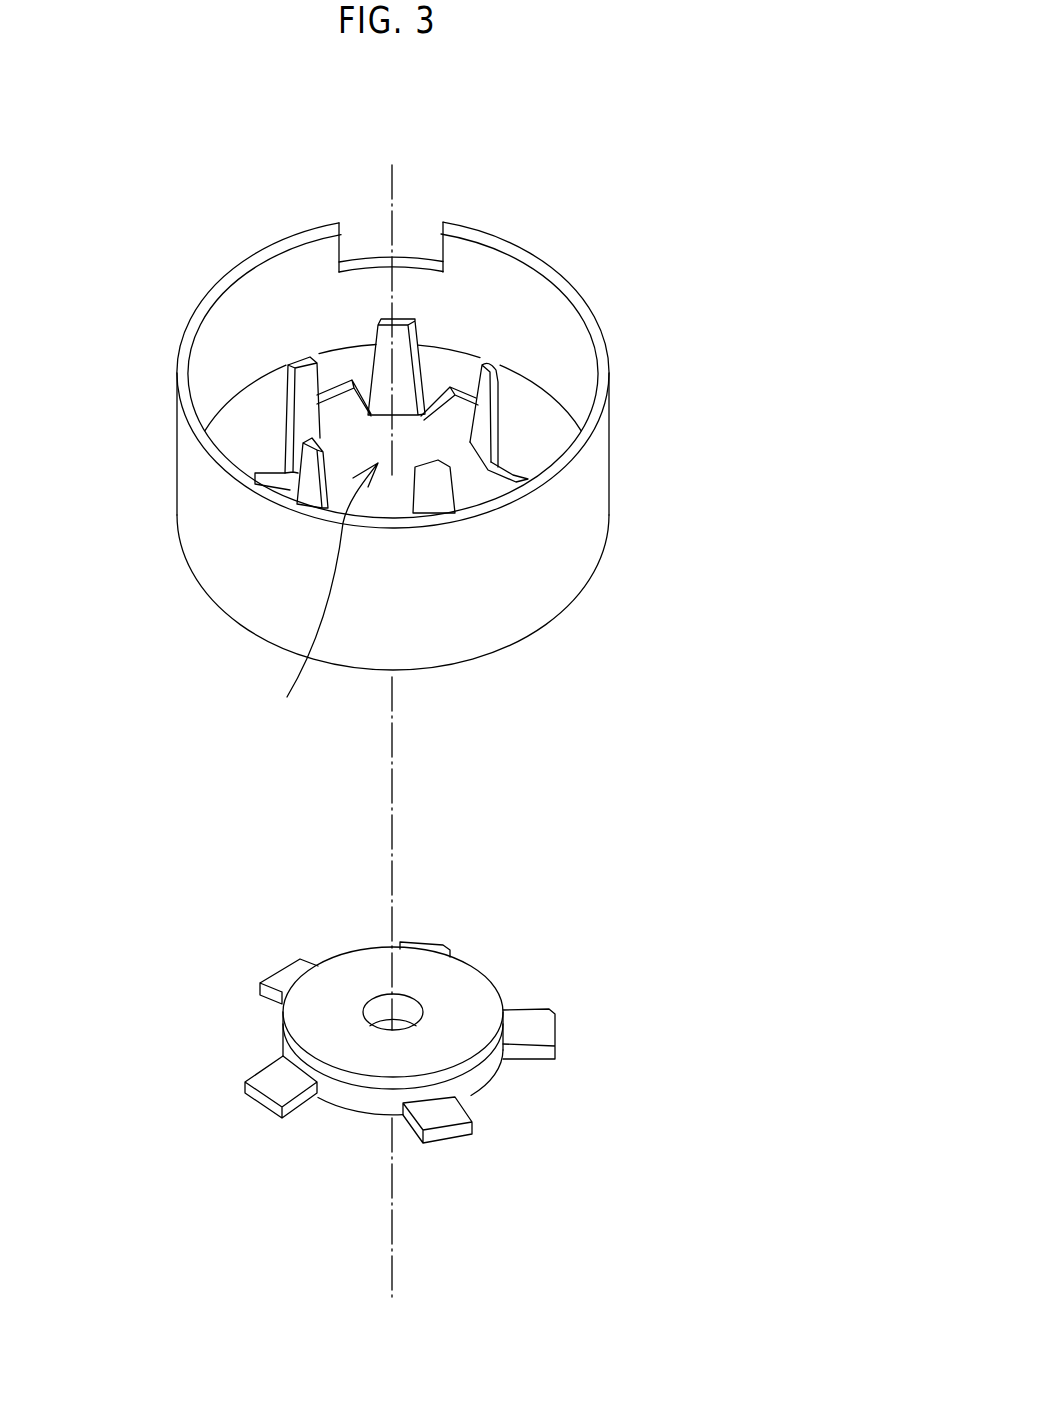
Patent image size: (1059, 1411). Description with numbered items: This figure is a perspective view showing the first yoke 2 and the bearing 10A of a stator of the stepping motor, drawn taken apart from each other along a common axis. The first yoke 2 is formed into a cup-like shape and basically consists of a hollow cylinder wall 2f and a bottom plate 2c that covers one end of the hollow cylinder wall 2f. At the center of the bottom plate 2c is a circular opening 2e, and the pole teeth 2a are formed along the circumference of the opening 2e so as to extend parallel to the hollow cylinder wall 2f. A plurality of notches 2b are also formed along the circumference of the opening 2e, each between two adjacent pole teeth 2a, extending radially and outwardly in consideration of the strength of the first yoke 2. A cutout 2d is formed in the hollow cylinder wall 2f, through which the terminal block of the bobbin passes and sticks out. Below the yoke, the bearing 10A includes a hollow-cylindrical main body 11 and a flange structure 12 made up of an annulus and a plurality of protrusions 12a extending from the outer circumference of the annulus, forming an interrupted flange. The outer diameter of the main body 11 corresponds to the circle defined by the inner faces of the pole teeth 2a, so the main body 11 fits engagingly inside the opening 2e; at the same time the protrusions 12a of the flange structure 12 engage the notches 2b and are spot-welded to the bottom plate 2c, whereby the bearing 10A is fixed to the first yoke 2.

The first yoke 2 is at (737, 233).
The pole teeth 2a is at (413, 365).
The notches 2b is at (341, 389).
The bottom plate 2c is at (530, 440).
The cutout 2d is at (418, 220).
The opening 2e is at (321, 603).
The hollow cylinder wall 2f is at (611, 479).
The bearing 10A is at (547, 1183).
The main body 11 is at (487, 988).
The flange structure 12 is at (483, 1082).
The protrusions 12a is at (430, 939).